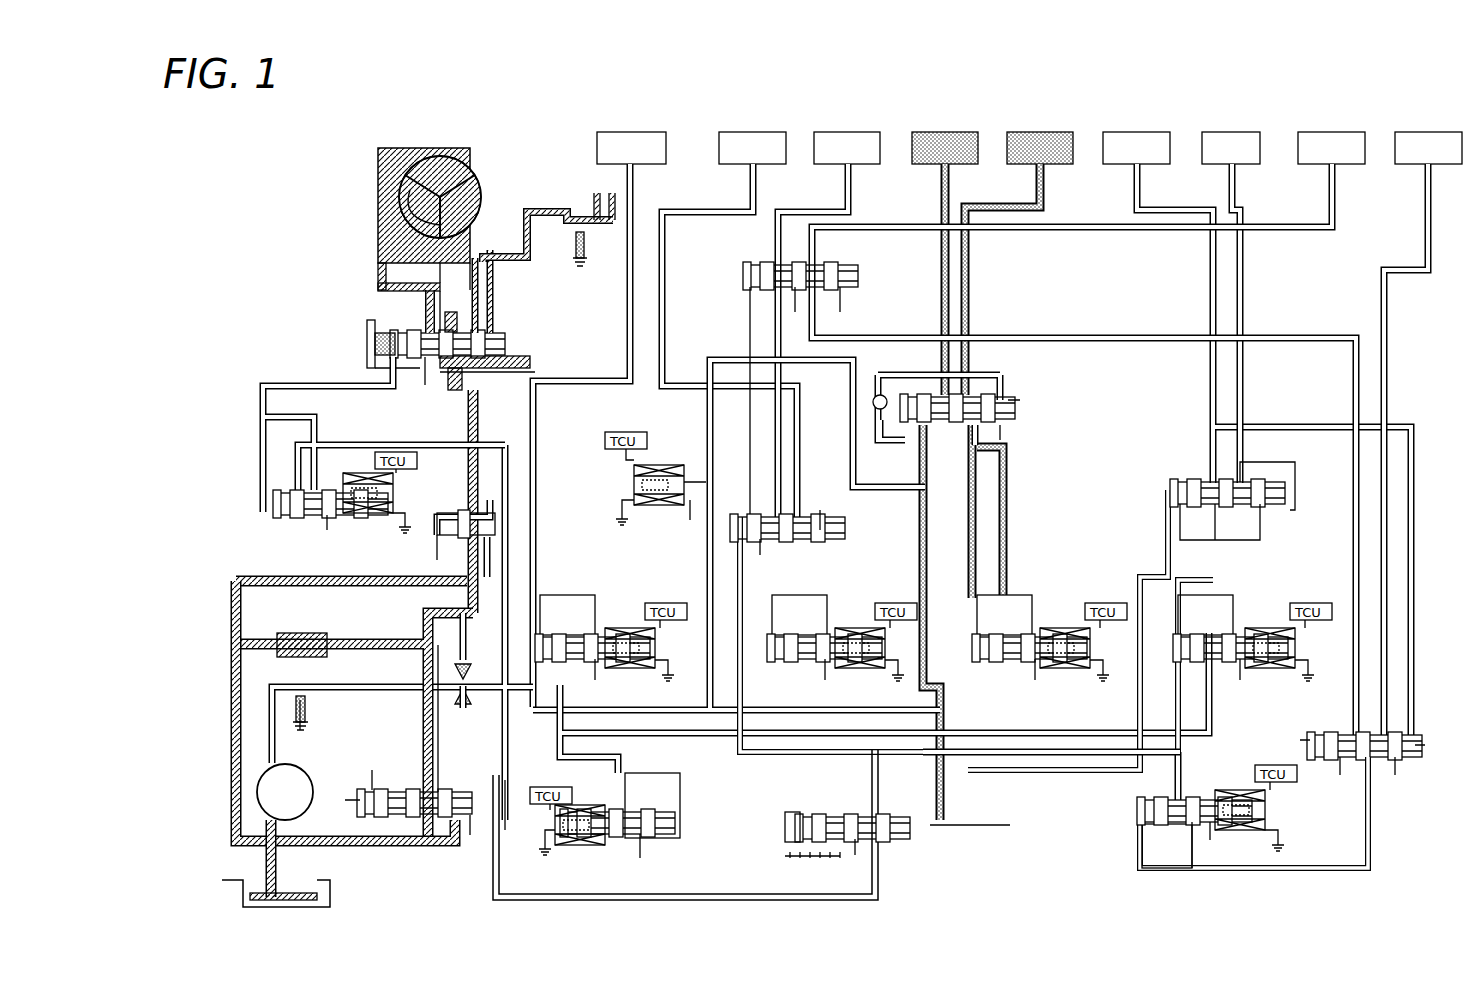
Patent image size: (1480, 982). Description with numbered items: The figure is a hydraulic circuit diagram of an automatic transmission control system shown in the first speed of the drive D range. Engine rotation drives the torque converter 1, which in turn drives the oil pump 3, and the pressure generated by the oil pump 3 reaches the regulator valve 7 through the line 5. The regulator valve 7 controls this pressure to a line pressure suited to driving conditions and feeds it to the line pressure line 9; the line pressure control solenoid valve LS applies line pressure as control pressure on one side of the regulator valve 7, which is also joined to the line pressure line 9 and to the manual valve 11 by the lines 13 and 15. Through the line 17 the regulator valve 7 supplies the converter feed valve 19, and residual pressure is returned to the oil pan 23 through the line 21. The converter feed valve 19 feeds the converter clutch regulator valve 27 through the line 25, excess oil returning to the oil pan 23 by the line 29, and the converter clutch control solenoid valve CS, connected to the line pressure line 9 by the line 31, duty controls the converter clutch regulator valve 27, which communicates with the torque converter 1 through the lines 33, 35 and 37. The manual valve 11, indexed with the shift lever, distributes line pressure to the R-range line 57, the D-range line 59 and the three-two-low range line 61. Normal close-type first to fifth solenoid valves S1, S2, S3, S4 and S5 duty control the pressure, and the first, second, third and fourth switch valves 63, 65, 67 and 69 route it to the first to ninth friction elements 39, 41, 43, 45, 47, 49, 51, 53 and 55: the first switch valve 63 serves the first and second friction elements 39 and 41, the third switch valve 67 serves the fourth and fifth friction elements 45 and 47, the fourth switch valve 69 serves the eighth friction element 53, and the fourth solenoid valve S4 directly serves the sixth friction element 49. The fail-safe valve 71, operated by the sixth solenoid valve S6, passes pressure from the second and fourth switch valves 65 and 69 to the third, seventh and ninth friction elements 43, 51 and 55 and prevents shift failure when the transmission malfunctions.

The torque converter 1 is at (478, 160).
The oil pump 3 is at (265, 767).
The line 5 is at (334, 692).
The regulator valve 7 is at (466, 770).
The line pressure line 9 is at (687, 708).
The manual valve 11 is at (812, 810).
The line 13 is at (508, 739).
The line 15 is at (683, 894).
The line 17 is at (425, 628).
The converter feed valve 19 is at (442, 508).
The line 21 is at (424, 850).
The oil pan 23 is at (330, 886).
The line 25 is at (468, 415).
The converter clutch regulator valve 27 is at (357, 330).
The line 29 is at (371, 578).
The line 31 is at (376, 440).
The line 33 is at (424, 298).
The line 35 is at (483, 280).
The line 37 is at (493, 312).
The first friction element 39 is at (945, 131).
The second friction element 41 is at (1040, 131).
The third friction element 43 is at (1428, 131).
The fourth friction element 45 is at (1232, 131).
The fifth friction element 47 is at (1137, 131).
The sixth friction element 49 is at (630, 131).
The seventh friction element 51 is at (848, 131).
The eighth friction element 53 is at (752, 131).
The ninth friction element 55 is at (1332, 131).
The R-range line 57 is at (845, 754).
The D-range line 59 is at (940, 765).
The 3,2,L-range line 61 is at (970, 786).
The first switch valve 63 is at (1022, 417).
The second switch valve 65 is at (1420, 748).
The third switch valve 67 is at (1181, 465).
The fourth switch valve 69 is at (738, 505).
The fail-safe valve 71 is at (870, 280).
The first solenoid valve S1 is at (1062, 606).
The second solenoid valve S2 is at (1282, 810).
The third solenoid valve S3 is at (1273, 606).
The fourth solenoid valve S4 is at (622, 606).
The fifth solenoid valve S5 is at (860, 606).
The sixth solenoid valve S6 is at (610, 478).
The converter clutch control solenoid valve CS is at (290, 528).
The line pressure control solenoid valve LS is at (680, 805).